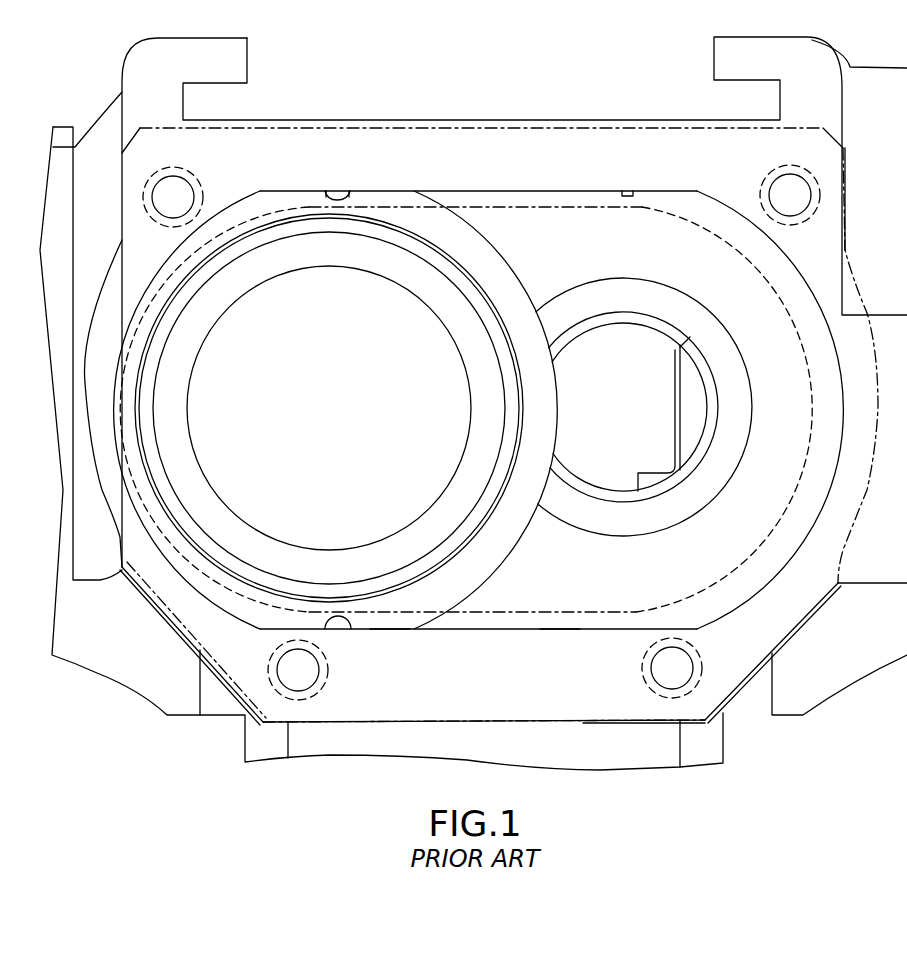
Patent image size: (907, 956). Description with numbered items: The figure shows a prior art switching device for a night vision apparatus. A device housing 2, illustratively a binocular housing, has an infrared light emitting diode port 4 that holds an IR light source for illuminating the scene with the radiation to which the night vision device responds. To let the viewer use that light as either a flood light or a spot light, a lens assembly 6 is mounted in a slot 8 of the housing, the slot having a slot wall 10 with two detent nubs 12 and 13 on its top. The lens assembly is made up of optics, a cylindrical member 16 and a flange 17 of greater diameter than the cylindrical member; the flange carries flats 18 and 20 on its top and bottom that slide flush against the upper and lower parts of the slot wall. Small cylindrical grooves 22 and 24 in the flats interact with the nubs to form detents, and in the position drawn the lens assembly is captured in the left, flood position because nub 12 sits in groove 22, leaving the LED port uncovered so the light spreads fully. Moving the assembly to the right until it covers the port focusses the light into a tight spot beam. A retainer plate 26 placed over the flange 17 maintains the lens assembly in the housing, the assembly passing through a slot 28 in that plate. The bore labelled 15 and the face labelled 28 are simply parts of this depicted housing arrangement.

The device housing 2 is at (278, 127).
The infrared light emitting diode port 4 is at (657, 363).
The lens assembly 6 is at (482, 597).
The slot 8 is at (558, 630).
The slot wall 10 is at (542, 190).
The detent nub 12 is at (335, 190).
The detent nub 13 is at (627, 190).
The main bore 15 is at (343, 583).
The cylindrical member 16 is at (475, 535).
The flange 17 is at (517, 523).
The flat 18 is at (390, 190).
The flat 20 is at (390, 630).
The cylindrical groove 22 is at (330, 195).
The cylindrical groove 24 is at (335, 632).
The retainer plate 26 is at (497, 205).
The slot 28 is at (792, 451).